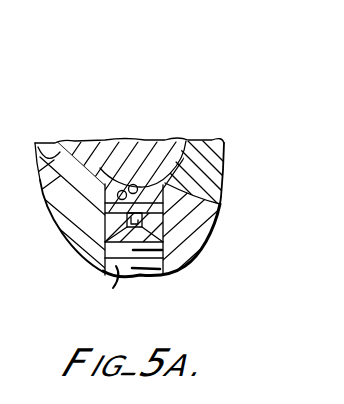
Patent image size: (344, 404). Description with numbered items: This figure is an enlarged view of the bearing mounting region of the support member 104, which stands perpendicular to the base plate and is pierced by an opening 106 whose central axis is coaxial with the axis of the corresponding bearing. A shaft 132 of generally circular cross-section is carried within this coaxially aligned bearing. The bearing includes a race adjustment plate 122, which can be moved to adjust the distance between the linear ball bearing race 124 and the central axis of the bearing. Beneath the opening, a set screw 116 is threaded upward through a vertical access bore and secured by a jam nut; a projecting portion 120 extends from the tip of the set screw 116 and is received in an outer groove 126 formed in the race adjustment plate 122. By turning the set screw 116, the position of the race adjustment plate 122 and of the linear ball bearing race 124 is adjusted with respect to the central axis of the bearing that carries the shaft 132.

The support member 104 is at (186, 259).
The opening 106 is at (57, 147).
The set screw 116 is at (113, 288).
The projecting portion 120 is at (192, 213).
The race adjustment plate 122 is at (77, 243).
The linear ball bearing race 124 is at (131, 185).
The outer groove 126 is at (220, 204).
The shaft 132 is at (176, 140).